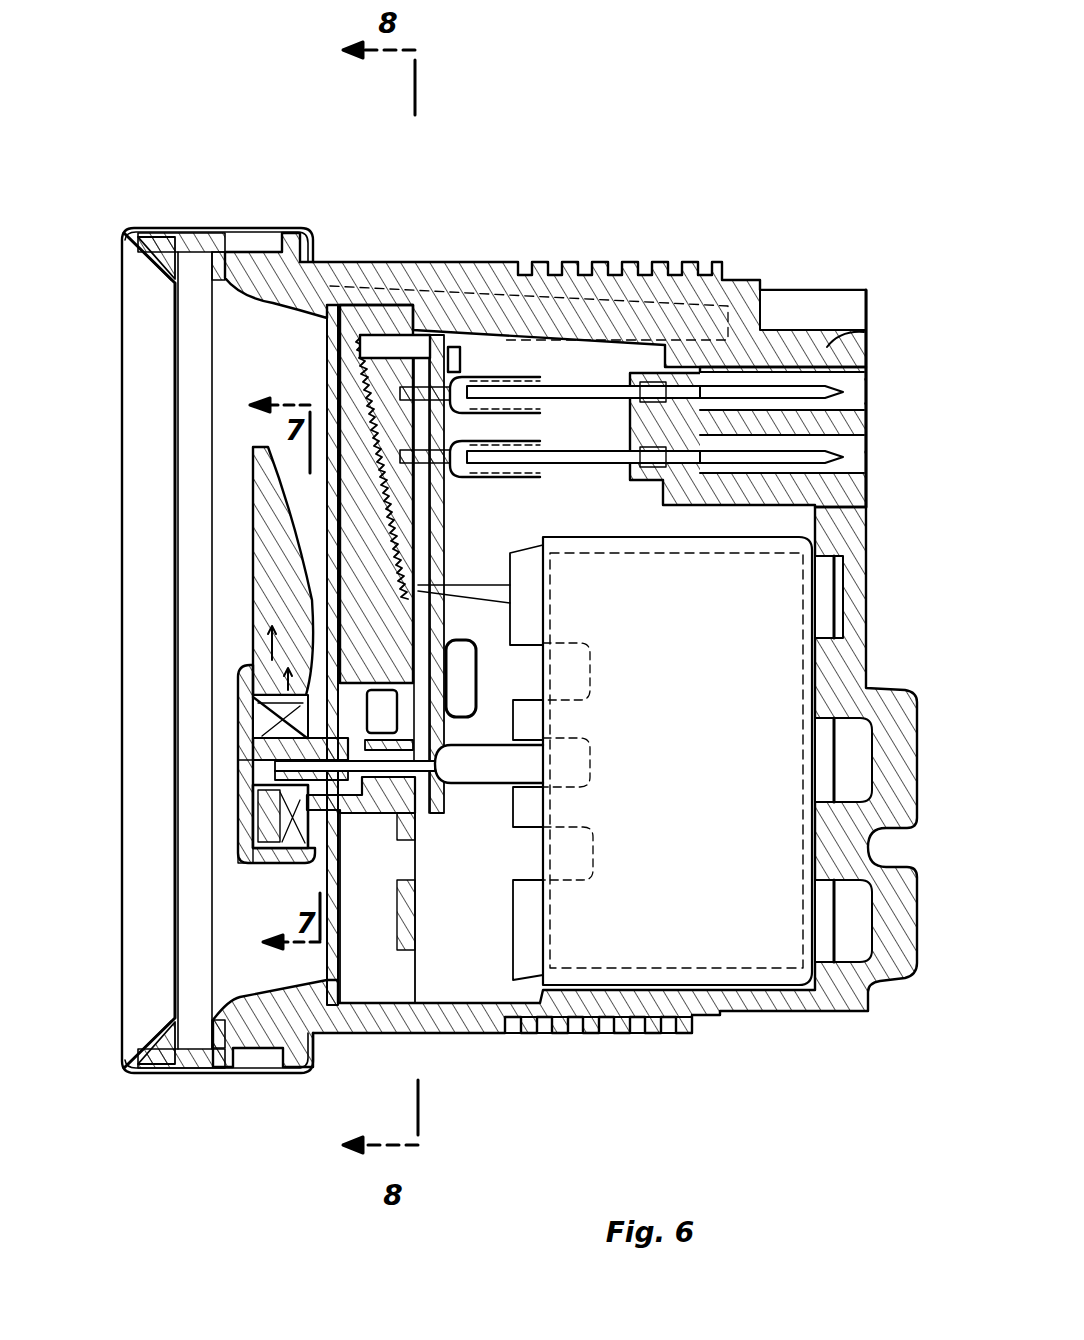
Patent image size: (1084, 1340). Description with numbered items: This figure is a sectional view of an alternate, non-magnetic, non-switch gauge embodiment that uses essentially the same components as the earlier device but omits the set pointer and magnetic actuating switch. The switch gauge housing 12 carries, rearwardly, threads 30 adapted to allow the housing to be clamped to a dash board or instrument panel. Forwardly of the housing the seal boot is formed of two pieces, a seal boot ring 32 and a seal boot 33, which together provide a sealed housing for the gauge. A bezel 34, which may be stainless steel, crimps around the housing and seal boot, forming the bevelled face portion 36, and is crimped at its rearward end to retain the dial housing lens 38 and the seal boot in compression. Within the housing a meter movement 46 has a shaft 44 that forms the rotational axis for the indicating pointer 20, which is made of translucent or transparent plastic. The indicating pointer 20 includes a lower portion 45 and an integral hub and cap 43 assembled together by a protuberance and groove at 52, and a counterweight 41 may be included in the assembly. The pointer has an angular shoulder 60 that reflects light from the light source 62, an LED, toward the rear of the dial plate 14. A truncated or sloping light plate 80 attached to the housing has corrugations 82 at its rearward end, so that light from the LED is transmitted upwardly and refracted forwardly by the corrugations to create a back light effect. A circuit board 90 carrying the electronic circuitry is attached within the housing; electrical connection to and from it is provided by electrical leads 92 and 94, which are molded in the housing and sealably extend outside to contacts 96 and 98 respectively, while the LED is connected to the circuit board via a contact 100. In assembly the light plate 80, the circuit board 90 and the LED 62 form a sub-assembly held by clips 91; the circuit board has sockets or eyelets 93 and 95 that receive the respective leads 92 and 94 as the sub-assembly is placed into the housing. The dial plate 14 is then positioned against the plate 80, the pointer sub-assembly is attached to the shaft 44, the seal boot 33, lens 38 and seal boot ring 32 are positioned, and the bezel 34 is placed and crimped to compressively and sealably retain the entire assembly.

The switch gauge housing 12 is at (410, 262).
The dial plate 14 is at (327, 350).
The indicating pointer 20 is at (265, 580).
The threads 30 is at (567, 262).
The seal boot ring 32 is at (150, 255).
The seal boot 33 is at (215, 1045).
The bezel 34 is at (250, 228).
The bevelled face portion 36 is at (122, 275).
The dial housing lens 38 is at (197, 270).
The counterweight 41 is at (245, 797).
The integral hub and cap 43 is at (250, 722).
The shaft 44 is at (445, 782).
The lower portion 45 is at (262, 826).
The meter movement 46 is at (718, 686).
The protuberance and groove 52 is at (300, 856).
The angular shoulder 60 is at (240, 738).
The light source (LED) 62 is at (385, 705).
The light plate 80 is at (462, 358).
The corrugations 82 is at (400, 506).
The circuit board 90 is at (437, 335).
The clips 91 is at (457, 345).
The electrical lead 92 is at (590, 396).
The electrical connection socket or eyelet 93 is at (513, 378).
The electrical lead 94 is at (585, 458).
The electrical connection socket or eyelet 95 is at (513, 440).
The contact 96 is at (797, 390).
The contact 98 is at (788, 453).
The contact 100 is at (468, 638).